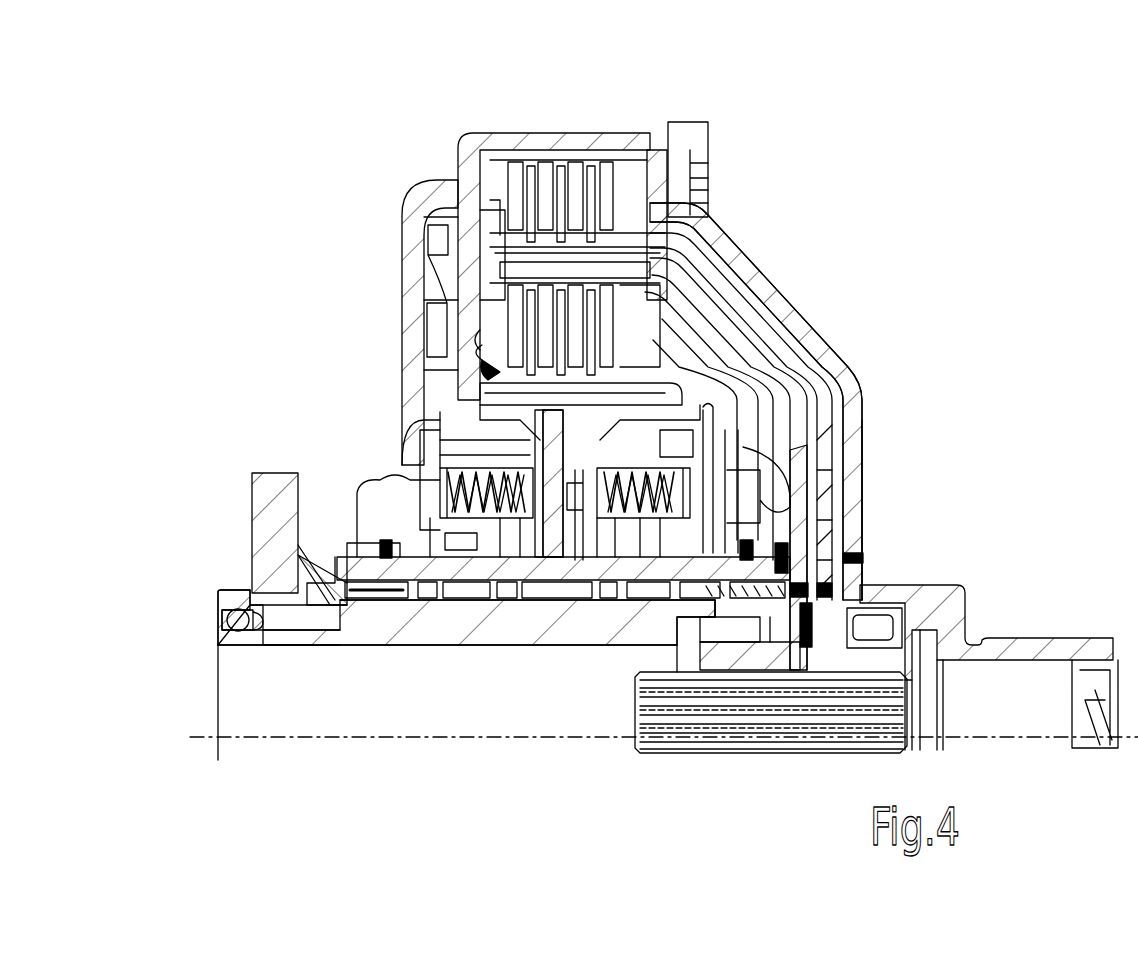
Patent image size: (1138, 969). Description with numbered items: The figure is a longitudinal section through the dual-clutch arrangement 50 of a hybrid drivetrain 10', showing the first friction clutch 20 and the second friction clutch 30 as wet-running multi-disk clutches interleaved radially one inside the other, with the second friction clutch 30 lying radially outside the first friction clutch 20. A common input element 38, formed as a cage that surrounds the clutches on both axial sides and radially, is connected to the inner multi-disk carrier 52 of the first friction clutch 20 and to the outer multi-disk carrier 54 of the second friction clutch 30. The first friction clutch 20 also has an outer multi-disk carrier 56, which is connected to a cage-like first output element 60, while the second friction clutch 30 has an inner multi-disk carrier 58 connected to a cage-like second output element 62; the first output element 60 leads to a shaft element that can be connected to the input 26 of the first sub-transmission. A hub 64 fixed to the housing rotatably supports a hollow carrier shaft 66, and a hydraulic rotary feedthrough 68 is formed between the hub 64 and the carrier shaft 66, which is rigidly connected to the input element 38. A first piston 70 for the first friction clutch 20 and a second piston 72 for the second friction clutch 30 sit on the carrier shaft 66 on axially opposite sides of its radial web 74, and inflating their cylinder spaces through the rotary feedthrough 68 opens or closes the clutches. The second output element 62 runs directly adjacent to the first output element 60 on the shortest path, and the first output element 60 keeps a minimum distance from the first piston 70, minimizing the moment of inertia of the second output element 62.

The drivetrain 10' is at (669, 421).
The first friction clutch 20 is at (380, 341).
The input of the first sub-transmission 26 is at (700, 642).
The second friction clutch 30 is at (392, 157).
The input element 38 is at (853, 537).
The dual-clutch arrangement 50 is at (823, 168).
The inner multi-disk carrier 52 is at (500, 390).
The outer multi-disk carrier 54 is at (513, 157).
The outer multi-disk carrier 56 is at (433, 293).
The inner multi-disk carrier 58 is at (505, 235).
The first output element 60 is at (803, 378).
The second output element 62 is at (825, 450).
The hub 64 is at (347, 605).
The carrier shaft 66 is at (348, 567).
The hydraulic rotary feedthrough 68 is at (450, 605).
The first piston 70 is at (805, 488).
The second piston 72 is at (417, 367).
The radial web 74 is at (555, 560).